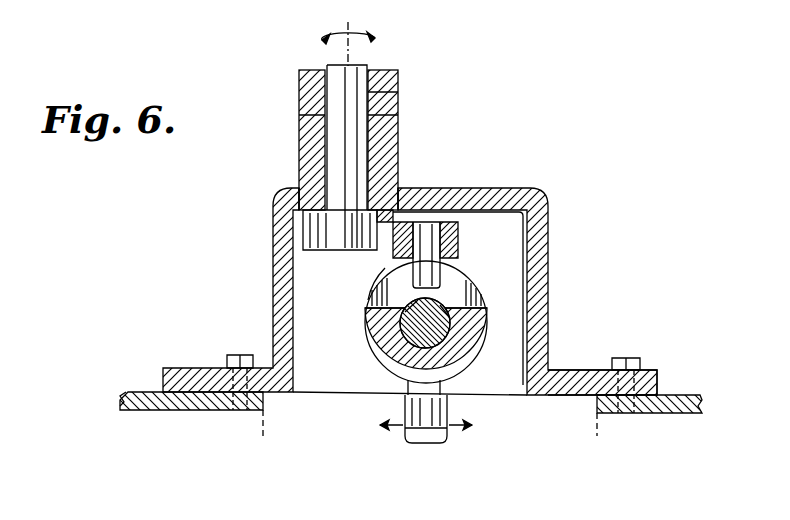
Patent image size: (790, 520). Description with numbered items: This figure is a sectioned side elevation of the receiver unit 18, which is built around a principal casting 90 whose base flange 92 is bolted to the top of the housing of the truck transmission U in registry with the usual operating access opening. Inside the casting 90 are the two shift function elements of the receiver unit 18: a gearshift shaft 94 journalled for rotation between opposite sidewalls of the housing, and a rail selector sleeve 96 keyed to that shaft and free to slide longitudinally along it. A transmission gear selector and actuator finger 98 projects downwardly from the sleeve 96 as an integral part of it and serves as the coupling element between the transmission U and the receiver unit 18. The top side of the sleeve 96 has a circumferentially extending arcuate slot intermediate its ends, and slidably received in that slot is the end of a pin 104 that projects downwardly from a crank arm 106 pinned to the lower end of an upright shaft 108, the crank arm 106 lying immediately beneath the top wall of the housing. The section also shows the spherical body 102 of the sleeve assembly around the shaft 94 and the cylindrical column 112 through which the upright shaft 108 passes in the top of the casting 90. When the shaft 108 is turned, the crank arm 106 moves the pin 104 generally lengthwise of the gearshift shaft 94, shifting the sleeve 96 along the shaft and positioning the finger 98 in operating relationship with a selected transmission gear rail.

The receiver unit 18 is at (244, 175).
The truck transmission U is at (157, 392).
The principal casting 90 is at (548, 232).
The base flange 92 is at (577, 369).
The gearshift shaft 94 is at (400, 328).
The rail selector sleeve 96 is at (368, 312).
The transmission gear selector and actuator finger 98 is at (440, 436).
The spherical member 102 is at (468, 296).
The pin 104 is at (445, 270).
The crank arm 106 is at (459, 238).
The upright shaft 108 is at (375, 72).
The cylindrical column 112 is at (397, 157).